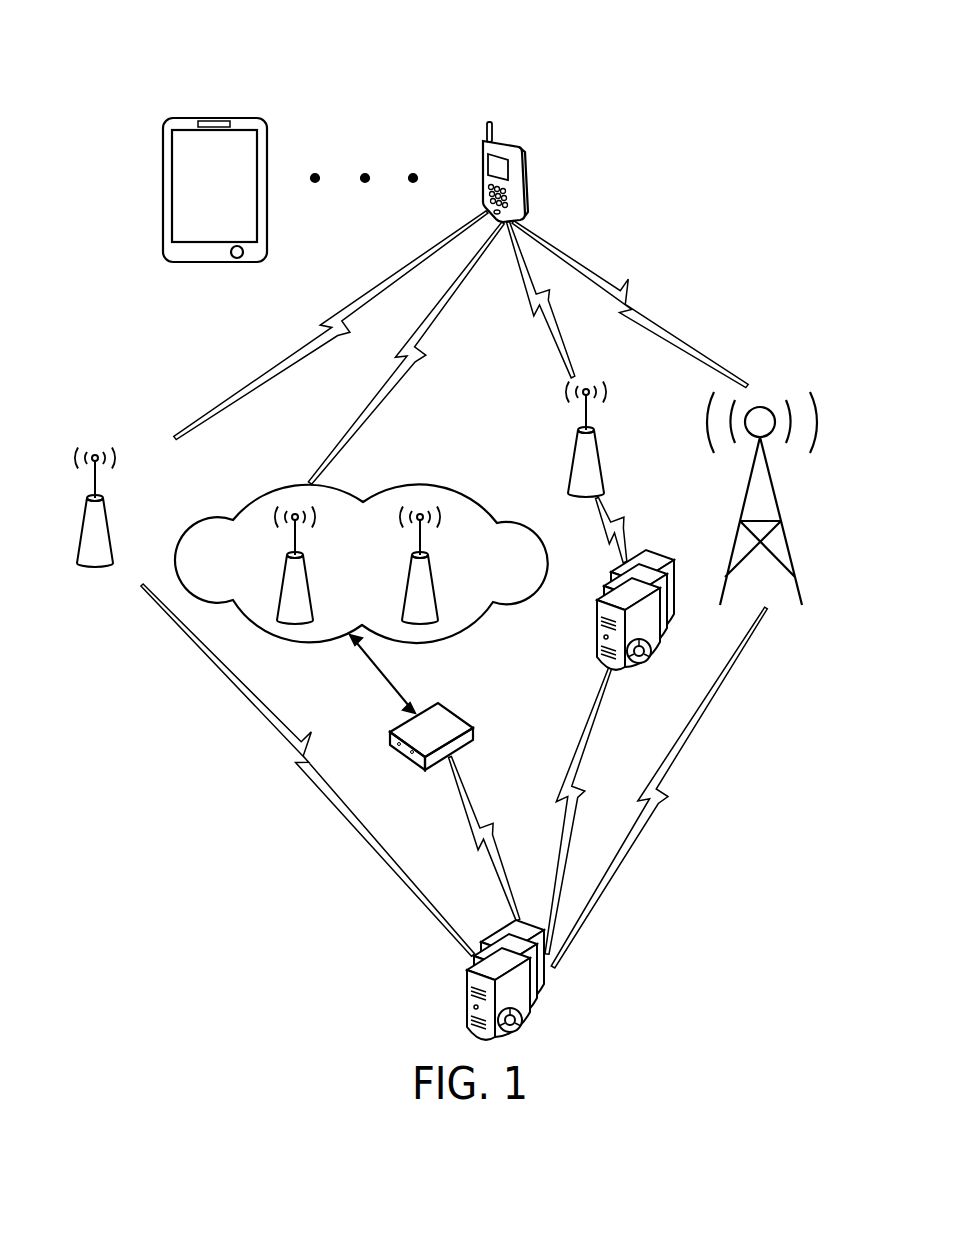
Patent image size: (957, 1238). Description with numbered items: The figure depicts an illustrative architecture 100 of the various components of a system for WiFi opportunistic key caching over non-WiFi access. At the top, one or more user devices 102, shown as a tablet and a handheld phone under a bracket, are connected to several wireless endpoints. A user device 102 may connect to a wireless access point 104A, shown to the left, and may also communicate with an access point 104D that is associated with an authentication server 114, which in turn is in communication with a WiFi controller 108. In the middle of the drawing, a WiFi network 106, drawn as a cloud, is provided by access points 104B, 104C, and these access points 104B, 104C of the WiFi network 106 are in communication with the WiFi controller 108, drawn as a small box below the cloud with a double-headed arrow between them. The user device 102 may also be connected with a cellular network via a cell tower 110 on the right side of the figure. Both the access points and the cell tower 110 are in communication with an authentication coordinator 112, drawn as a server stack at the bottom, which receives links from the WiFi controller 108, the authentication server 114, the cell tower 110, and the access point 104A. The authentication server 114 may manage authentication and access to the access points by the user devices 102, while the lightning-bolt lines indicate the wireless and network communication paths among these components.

The architecture 100 is at (740, 60).
The user device 102 is at (537, 110).
The access point 104A is at (108, 515).
The access point 104B is at (283, 580).
The access point 104C is at (432, 582).
The access point 104D is at (597, 449).
The WiFi network 106 is at (418, 483).
The WiFi controller 108 is at (450, 745).
The cell tower 110 is at (777, 498).
The authentication coordinator 112 is at (548, 1000).
The authentication server 114 is at (625, 665).